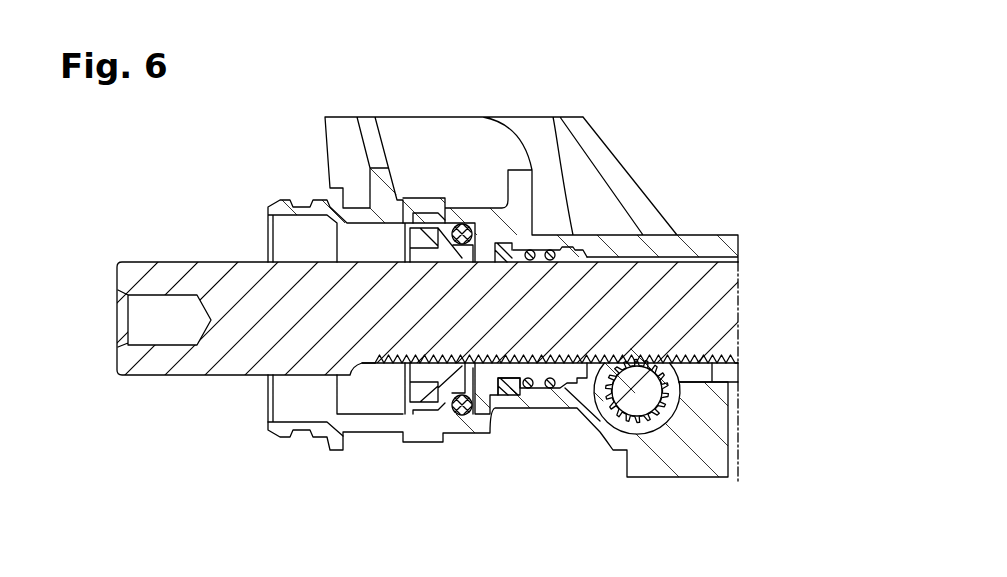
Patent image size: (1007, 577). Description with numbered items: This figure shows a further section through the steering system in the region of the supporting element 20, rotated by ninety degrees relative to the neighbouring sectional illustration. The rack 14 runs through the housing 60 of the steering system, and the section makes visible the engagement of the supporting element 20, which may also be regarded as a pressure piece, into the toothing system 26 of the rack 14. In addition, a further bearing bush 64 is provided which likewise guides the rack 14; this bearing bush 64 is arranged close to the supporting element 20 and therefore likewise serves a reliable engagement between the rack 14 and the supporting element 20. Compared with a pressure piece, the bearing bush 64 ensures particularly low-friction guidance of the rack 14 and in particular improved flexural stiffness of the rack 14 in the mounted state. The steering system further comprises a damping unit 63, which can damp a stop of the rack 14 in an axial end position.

The rack 14 is at (230, 294).
The supporting element 20 is at (638, 396).
The toothing system 26 is at (715, 385).
The housing 60 is at (702, 452).
The damping unit 63 is at (452, 224).
The bearing bush 64 is at (509, 396).